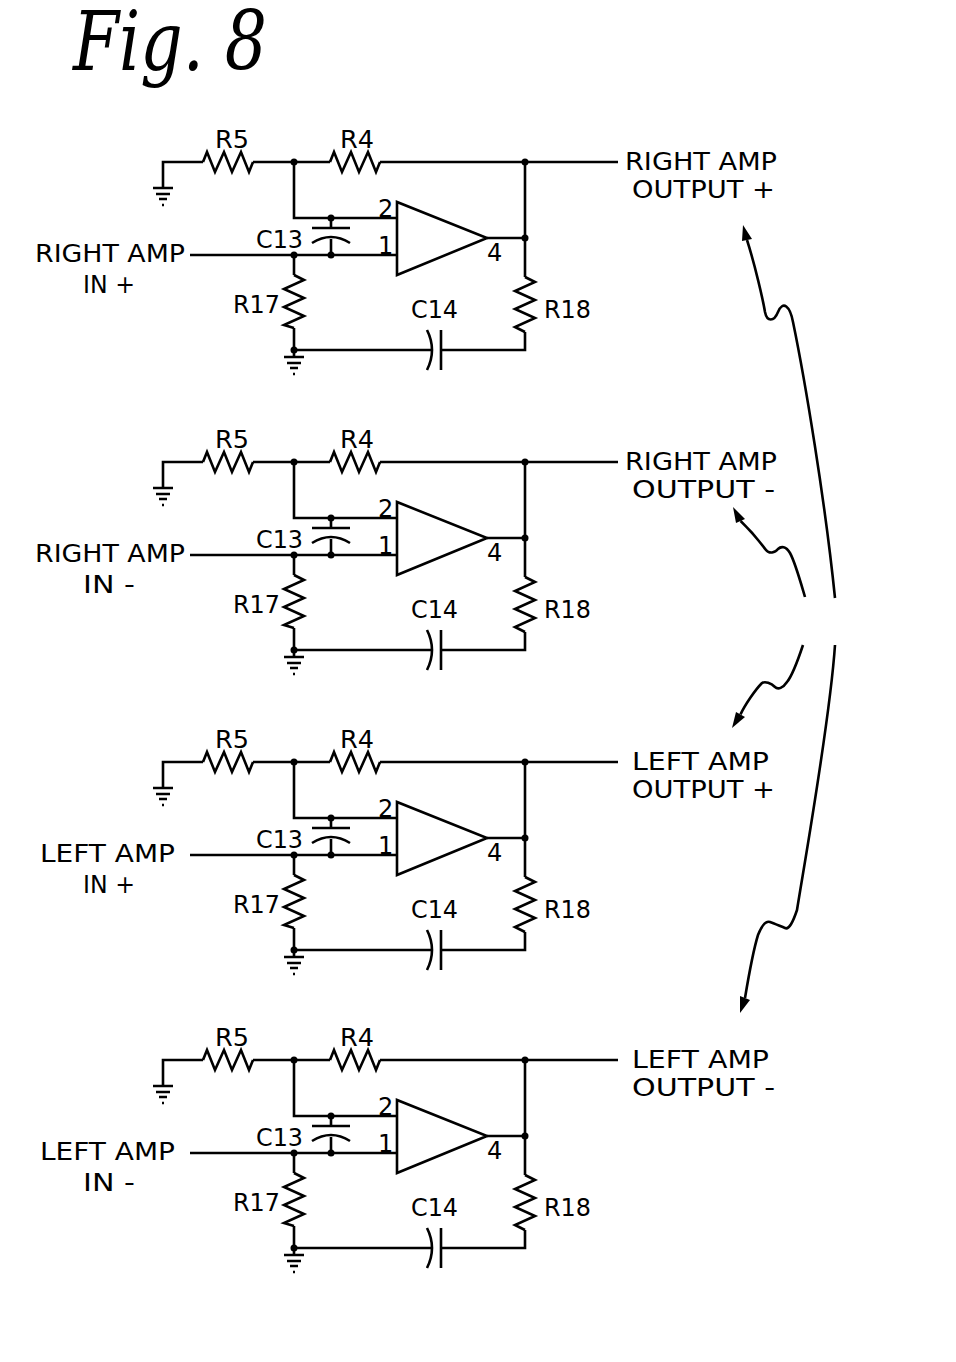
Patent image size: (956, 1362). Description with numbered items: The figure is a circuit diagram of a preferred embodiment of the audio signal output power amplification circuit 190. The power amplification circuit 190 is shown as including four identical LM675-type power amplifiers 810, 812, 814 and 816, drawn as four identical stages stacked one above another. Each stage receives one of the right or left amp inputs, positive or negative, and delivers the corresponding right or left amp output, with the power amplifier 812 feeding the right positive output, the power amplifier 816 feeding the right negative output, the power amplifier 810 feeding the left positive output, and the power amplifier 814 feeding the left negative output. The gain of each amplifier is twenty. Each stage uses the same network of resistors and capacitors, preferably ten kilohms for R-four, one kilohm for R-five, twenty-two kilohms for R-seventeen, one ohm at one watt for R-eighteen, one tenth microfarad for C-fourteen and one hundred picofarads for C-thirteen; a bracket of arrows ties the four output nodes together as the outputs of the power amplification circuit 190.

The power amplifier 812 is at (448, 224).
The power amplifier 816 is at (448, 524).
The power amplifier 810 is at (448, 824).
The power amplifier 814 is at (448, 1122).
The power amplification circuit 190 is at (789, 619).